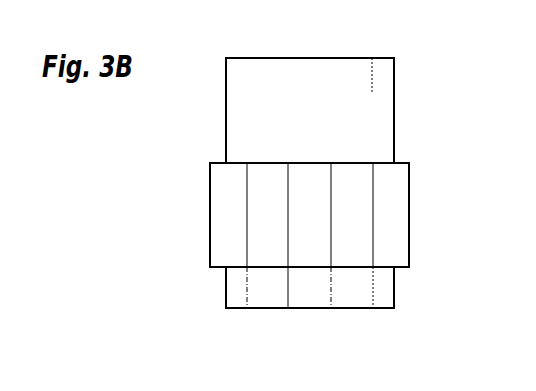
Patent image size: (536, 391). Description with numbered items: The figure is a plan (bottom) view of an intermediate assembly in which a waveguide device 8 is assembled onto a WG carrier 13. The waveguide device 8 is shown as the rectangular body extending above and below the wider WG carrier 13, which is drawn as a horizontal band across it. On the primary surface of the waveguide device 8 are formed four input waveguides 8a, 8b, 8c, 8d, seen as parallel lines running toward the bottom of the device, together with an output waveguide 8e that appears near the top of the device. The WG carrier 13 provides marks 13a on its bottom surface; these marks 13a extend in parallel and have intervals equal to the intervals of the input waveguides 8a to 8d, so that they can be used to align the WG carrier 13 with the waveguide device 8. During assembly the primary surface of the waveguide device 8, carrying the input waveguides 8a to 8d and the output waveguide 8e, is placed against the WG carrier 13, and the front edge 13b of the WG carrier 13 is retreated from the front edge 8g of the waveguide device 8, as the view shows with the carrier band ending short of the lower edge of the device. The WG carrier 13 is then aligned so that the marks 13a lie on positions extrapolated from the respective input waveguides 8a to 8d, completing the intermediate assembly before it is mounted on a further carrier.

The waveguide device 8 is at (383, 110).
The input waveguide 8a is at (374, 308).
The input waveguide 8b is at (332, 308).
The input waveguide 8c is at (289, 308).
The input waveguide 8d is at (248, 308).
The output waveguide 8e is at (371, 72).
The front edge of the waveguide device 8g is at (383, 309).
The WG carrier 13 is at (402, 220).
The marks 13a is at (372, 180).
The front edge of the WG carrier 13b is at (218, 271).